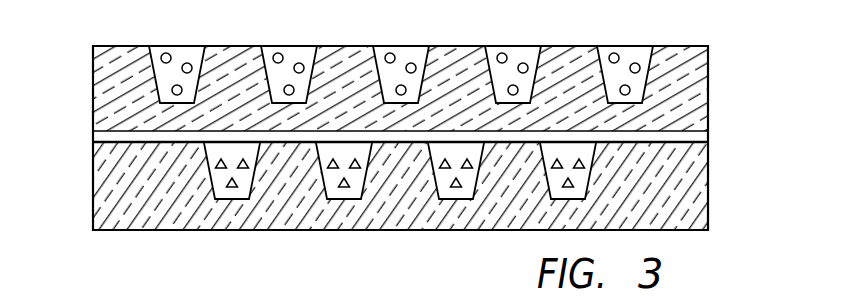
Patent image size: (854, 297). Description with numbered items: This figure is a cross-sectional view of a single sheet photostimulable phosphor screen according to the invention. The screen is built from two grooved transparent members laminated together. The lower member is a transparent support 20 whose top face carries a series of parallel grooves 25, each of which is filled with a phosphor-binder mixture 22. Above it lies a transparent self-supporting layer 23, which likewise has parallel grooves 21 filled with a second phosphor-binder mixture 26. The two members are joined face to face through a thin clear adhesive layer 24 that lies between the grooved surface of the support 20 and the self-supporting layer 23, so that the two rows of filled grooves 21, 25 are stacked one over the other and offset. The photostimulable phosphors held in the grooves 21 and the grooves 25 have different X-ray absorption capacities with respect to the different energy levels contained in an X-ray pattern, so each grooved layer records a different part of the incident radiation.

The transparent support 20 is at (685, 210).
The parallel grooves 21 is at (181, 45).
The phosphor-binder mixture 22 is at (580, 182).
The upper layer 23 is at (693, 107).
The clear adhesive layer 24 is at (93, 137).
The parallel grooves 25 is at (223, 201).
The phosphor-binder mixture 26 is at (638, 56).